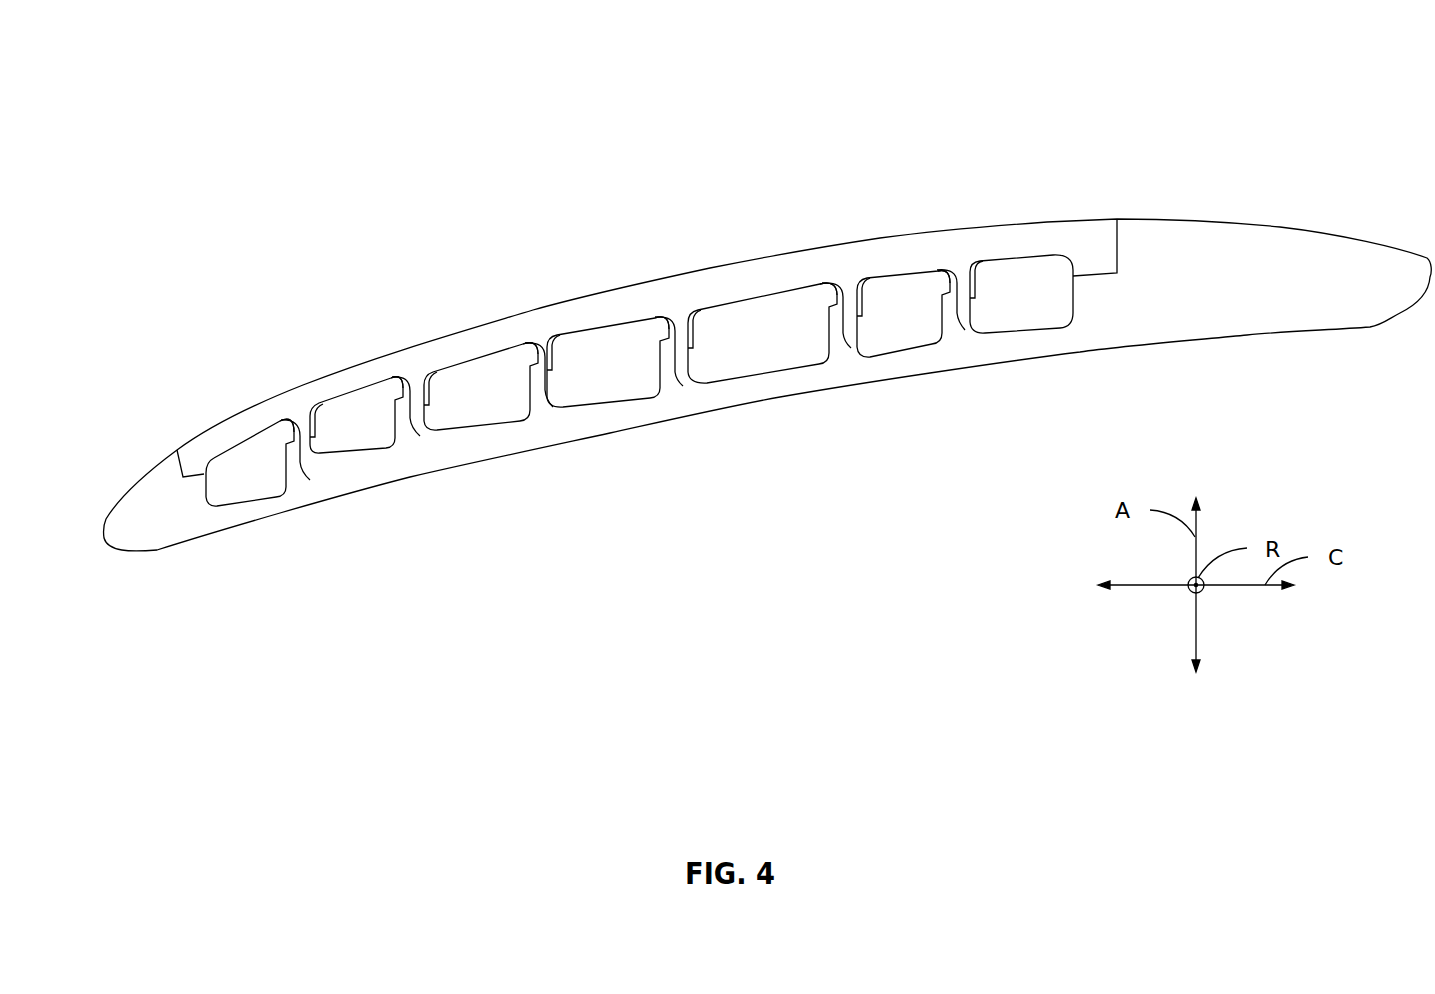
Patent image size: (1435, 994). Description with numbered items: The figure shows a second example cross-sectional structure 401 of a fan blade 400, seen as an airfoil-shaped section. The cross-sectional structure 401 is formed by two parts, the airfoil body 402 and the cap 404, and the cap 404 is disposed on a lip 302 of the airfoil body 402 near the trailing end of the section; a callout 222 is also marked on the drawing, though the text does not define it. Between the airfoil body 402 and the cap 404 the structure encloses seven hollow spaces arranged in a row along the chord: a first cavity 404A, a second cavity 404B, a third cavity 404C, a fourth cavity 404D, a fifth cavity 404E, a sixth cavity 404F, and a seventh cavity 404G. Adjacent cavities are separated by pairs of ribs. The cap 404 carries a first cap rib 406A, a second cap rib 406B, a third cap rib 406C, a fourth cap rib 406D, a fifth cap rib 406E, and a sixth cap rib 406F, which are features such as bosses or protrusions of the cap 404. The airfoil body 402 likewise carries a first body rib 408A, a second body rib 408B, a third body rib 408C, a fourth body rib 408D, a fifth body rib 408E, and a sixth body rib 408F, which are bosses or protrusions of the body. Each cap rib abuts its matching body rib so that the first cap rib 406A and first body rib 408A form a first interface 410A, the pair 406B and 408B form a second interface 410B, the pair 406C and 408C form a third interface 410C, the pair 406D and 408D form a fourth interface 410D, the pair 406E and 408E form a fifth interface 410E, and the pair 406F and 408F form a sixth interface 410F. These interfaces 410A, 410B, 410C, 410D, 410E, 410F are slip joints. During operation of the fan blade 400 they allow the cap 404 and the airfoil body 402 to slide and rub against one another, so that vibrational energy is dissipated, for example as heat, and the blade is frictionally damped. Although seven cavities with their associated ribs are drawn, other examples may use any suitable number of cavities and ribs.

The skin section 222 is at (997, 205).
The lip 302 is at (1097, 279).
The fan blade 400 is at (1257, 93).
The cross-sectional structure 401 is at (1023, 145).
The airfoil body 402 is at (1247, 336).
The cap 404 is at (1047, 221).
The first cavity 404A is at (255, 497).
The second cavity 404B is at (392, 443).
The third cavity 404C is at (510, 418).
The fourth cavity 404D is at (630, 403).
The fifth cavity 404E is at (792, 370).
The sixth cavity 404F is at (932, 345).
The seventh cavity 404G is at (1063, 330).
The first cap rib 406A is at (304, 423).
The second cap rib 406B is at (413, 379).
The third cap rib 406C is at (548, 345).
The fourth cap rib 406D is at (679, 319).
The fifth cap rib 406E is at (847, 285).
The sixth cap rib 406F is at (960, 272).
The first body rib 408A is at (311, 436).
The second body rib 408B is at (420, 392).
The third body rib 408C is at (555, 358).
The fourth body rib 408D is at (686, 332).
The fifth body rib 408E is at (854, 298).
The sixth body rib 408F is at (967, 285).
The first interface 410A is at (310, 480).
The second interface 410B is at (420, 436).
The third interface 410C is at (553, 407).
The fourth interface 410D is at (683, 386).
The fifth interface 410E is at (851, 348).
The sixth interface 410F is at (965, 330).